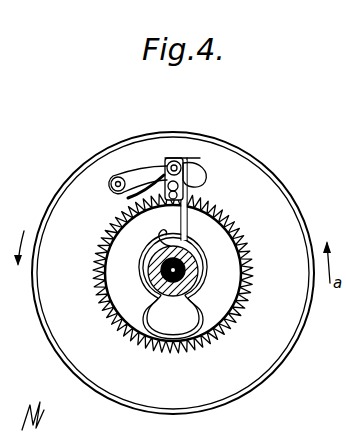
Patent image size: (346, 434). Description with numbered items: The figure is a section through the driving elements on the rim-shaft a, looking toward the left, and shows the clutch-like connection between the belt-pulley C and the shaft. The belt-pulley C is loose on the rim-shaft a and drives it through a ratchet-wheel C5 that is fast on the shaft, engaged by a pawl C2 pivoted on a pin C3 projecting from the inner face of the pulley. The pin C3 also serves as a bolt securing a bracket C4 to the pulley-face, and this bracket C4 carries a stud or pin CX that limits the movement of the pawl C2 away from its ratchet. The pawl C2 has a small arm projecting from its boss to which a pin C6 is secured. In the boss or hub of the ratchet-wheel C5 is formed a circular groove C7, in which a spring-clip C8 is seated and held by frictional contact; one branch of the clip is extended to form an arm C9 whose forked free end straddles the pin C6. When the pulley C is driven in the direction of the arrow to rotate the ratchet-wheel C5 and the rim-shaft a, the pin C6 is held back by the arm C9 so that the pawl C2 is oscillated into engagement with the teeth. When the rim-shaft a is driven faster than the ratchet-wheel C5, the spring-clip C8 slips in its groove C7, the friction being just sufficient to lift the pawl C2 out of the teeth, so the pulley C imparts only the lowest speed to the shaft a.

The belt-pulley C is at (283, 176).
The ratchet-wheel C5 is at (246, 243).
The rim-shaft a is at (198, 259).
The spring-clip C8 is at (200, 292).
The circular groove C7 is at (164, 243).
The arm C9 is at (188, 234).
The pin C3 is at (184, 163).
The pin C6 is at (206, 182).
The bracket C4 is at (134, 176).
The stud or pin CX is at (110, 186).
The pawl C2 is at (127, 198).